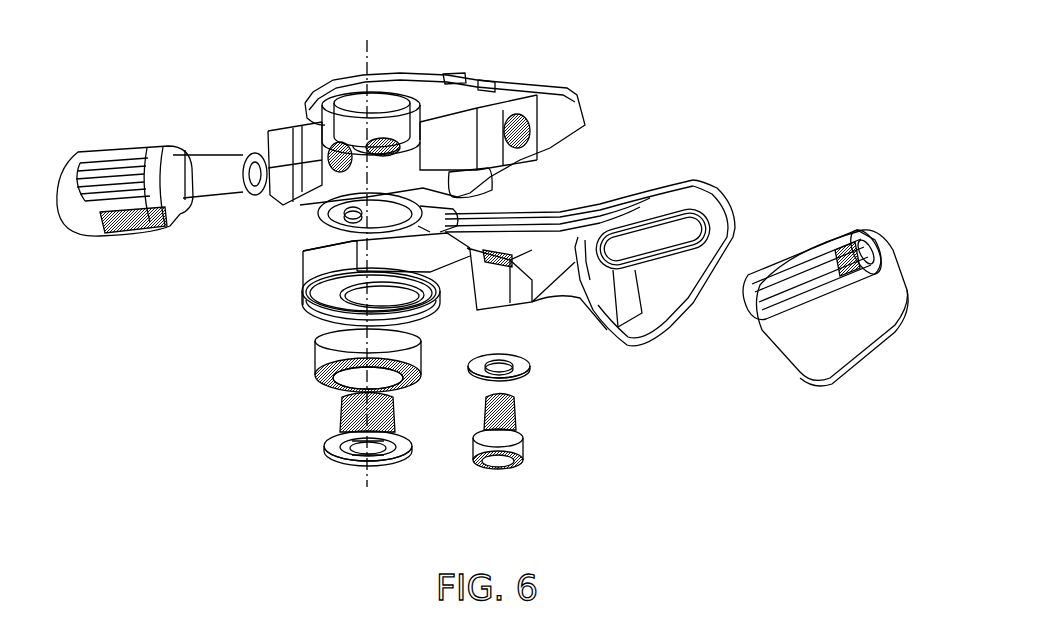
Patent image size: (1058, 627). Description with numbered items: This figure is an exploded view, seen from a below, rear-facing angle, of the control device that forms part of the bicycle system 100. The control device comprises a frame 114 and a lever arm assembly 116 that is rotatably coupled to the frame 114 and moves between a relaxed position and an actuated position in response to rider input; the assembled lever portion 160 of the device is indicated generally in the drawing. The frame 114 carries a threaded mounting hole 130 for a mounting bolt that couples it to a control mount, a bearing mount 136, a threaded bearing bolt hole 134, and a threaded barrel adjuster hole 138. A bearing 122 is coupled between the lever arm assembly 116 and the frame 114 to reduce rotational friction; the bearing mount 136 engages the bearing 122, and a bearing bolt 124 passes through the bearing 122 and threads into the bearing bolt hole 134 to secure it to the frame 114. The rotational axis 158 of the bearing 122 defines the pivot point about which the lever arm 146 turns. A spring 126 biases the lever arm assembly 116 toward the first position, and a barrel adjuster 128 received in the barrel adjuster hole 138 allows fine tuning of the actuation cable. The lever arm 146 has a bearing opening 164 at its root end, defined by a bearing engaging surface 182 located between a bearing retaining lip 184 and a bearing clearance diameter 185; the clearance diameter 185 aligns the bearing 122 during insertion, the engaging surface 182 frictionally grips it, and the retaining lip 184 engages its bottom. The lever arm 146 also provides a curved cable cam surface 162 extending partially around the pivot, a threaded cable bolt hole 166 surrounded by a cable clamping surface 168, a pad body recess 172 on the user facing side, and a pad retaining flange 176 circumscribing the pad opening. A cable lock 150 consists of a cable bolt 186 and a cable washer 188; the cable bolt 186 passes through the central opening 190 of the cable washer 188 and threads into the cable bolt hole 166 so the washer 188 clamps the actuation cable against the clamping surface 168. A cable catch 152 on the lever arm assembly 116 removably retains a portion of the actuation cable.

The system 100 is at (790, 350).
The frame 114 is at (452, 100).
The lever arm assembly 116 is at (818, 137).
The bearing 122 is at (330, 352).
The bearing bolt 124 is at (340, 438).
The spring 126 is at (317, 212).
The barrel adjuster 128 is at (140, 167).
The threaded mounting hole 130 is at (518, 123).
The threaded bearing bolt hole 134 is at (382, 143).
The bearing mount 136 is at (362, 132).
The threaded barrel adjuster hole 138 is at (330, 150).
The lever arm 146 is at (633, 308).
The cable lock 150 is at (524, 427).
The cable catch 152 is at (778, 302).
The rotational axis 158 is at (367, 467).
The lever 160 is at (482, 256).
The cable cam surface 162 is at (308, 272).
The bearing opening 164 is at (397, 307).
The threaded cable bolt hole 166 is at (505, 257).
The cable clamping surface 168 is at (518, 248).
The pad body recess 172 is at (583, 265).
The pad retaining flange 176 is at (652, 225).
The bearing engaging surface 182 is at (328, 300).
The bearing retaining lip 184 is at (343, 315).
The bearing clearance diameter 185 is at (362, 292).
The cable bolt 186 is at (512, 443).
The cable washer 188 is at (527, 370).
The central opening 190 is at (498, 368).